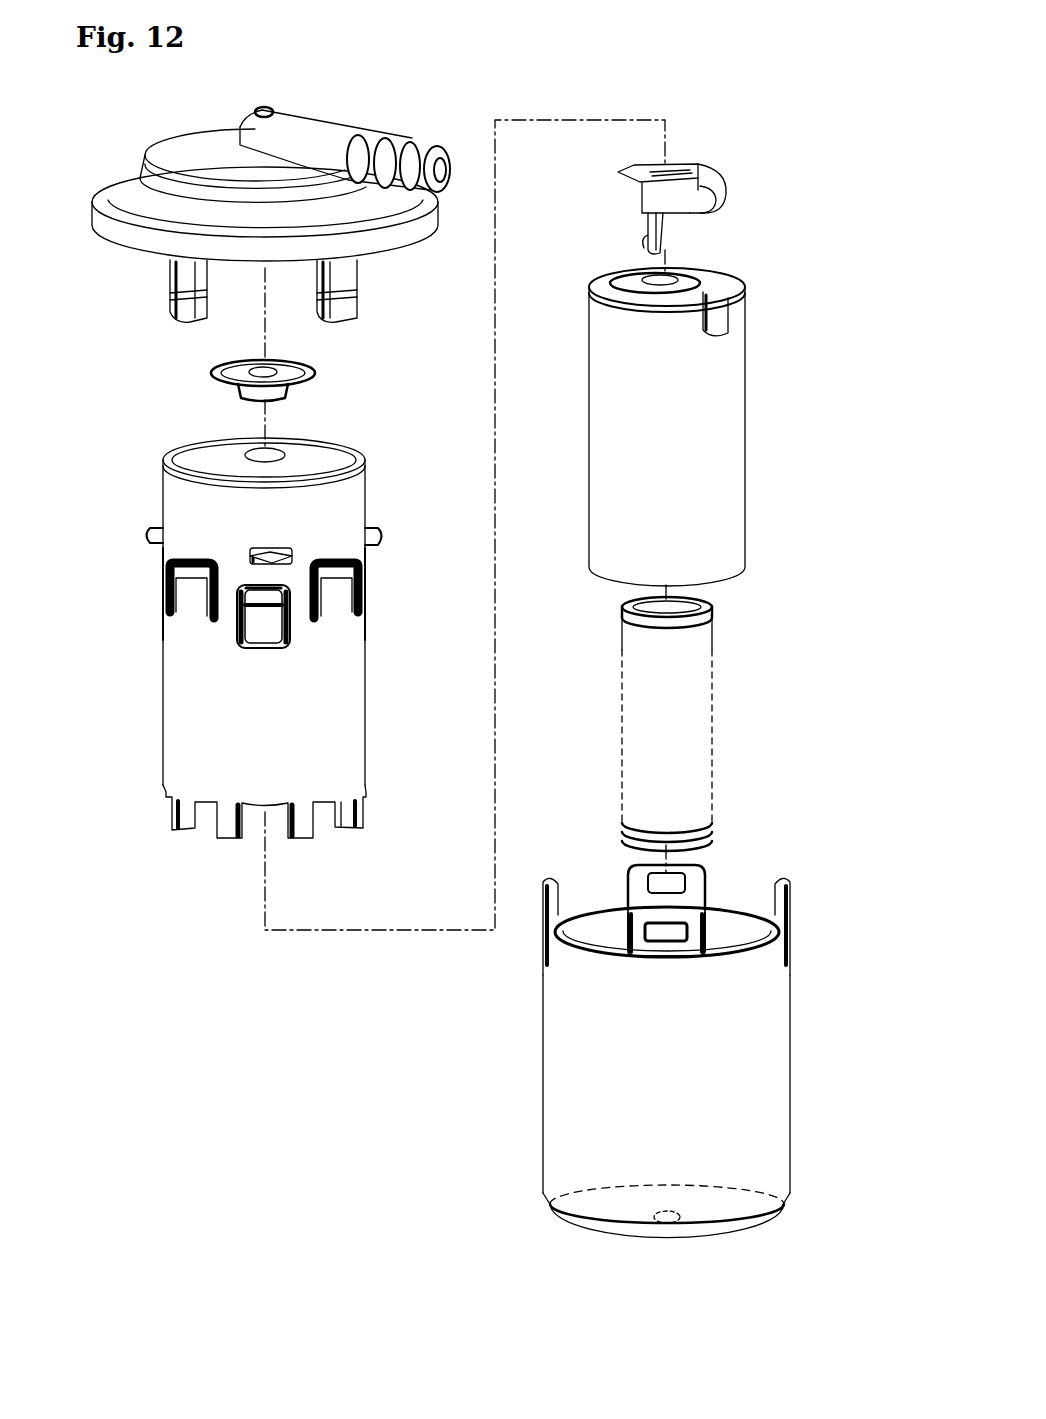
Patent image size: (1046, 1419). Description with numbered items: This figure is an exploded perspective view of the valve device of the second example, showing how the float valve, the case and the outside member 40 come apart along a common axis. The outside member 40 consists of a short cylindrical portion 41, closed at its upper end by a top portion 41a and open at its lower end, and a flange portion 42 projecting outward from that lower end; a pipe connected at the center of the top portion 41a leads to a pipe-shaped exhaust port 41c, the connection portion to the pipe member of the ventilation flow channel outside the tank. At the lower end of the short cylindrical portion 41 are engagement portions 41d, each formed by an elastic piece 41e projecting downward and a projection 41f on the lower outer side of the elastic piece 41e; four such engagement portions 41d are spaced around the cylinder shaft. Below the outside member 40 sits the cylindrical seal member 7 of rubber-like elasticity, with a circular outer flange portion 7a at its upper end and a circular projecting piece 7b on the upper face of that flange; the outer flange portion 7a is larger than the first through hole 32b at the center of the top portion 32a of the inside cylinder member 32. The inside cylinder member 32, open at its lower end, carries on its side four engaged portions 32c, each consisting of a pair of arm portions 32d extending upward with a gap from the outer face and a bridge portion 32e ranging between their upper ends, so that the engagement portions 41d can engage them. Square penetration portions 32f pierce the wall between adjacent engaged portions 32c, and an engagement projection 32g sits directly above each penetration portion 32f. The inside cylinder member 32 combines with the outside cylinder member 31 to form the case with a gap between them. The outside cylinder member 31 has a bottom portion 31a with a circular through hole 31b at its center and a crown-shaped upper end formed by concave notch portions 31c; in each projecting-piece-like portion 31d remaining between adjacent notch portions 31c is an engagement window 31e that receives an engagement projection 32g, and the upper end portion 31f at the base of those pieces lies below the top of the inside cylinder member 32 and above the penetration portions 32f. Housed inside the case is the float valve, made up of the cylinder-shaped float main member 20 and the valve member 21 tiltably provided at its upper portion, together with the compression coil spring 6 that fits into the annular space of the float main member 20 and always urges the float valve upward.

The outside member 40 is at (266, 209).
The short cylindrical portion 41 is at (207, 170).
The top portion 41a is at (280, 165).
The exhaust port 41c is at (352, 125).
The engagement portion 41d is at (266, 310).
The elastic piece 41e is at (266, 310).
The projection 41f is at (390, 295).
The flange portion 42 is at (428, 212).
The cylindrical seal member 7 is at (304, 381).
The outer flange portion 7a is at (315, 372).
The circular projecting piece 7b is at (300, 365).
The inside cylinder member 32 is at (269, 615).
The top portion 32a is at (207, 452).
The first through hole 32b is at (287, 452).
The engaged portion 32c is at (269, 594).
The arm portion 32d is at (165, 602).
The bridge portion 32e is at (187, 572).
The penetration portion 32f is at (262, 630).
The engagement projection 32g is at (158, 530).
The valve member 21 is at (680, 165).
The float main member 20 is at (715, 450).
The compression coil spring 6 is at (712, 735).
The outside cylinder member 31 is at (678, 1042).
The bottom portion 31a is at (710, 1226).
The circular through hole 31b is at (658, 1226).
The concave notch portion 31c is at (587, 898).
The projecting-piece-like portion 31d is at (793, 888).
The engagement window 31e is at (687, 878).
The upper end portion 31f is at (787, 962).